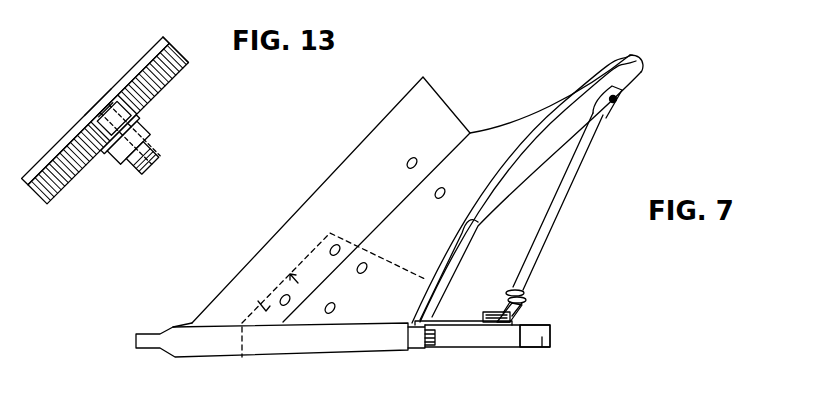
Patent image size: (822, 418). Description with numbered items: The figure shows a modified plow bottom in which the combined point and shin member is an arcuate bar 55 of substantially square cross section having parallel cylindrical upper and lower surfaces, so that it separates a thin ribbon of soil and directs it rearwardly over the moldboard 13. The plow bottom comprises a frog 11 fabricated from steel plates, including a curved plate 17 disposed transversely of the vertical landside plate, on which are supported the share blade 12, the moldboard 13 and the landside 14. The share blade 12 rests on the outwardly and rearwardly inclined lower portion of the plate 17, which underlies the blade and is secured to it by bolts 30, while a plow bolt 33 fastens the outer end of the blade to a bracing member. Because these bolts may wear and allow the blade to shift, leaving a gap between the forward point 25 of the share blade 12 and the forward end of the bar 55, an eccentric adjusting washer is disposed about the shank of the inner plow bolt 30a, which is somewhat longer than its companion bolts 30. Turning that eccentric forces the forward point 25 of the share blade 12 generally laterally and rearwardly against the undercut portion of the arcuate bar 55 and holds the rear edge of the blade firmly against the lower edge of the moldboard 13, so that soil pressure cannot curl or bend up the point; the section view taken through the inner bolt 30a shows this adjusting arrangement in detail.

The frog 11 is at (435, 297).
The share blade 12 is at (343, 172).
The moldboard 13 is at (538, 148).
The landside 14 is at (549, 347).
The curved plate 17 is at (395, 262).
The forward point of the share blade 25 is at (192, 323).
The bolts 30 is at (335, 245).
The inner plow bolt 30a is at (284, 296).
The plow bolt 33 is at (412, 159).
The bar 55 is at (347, 356).